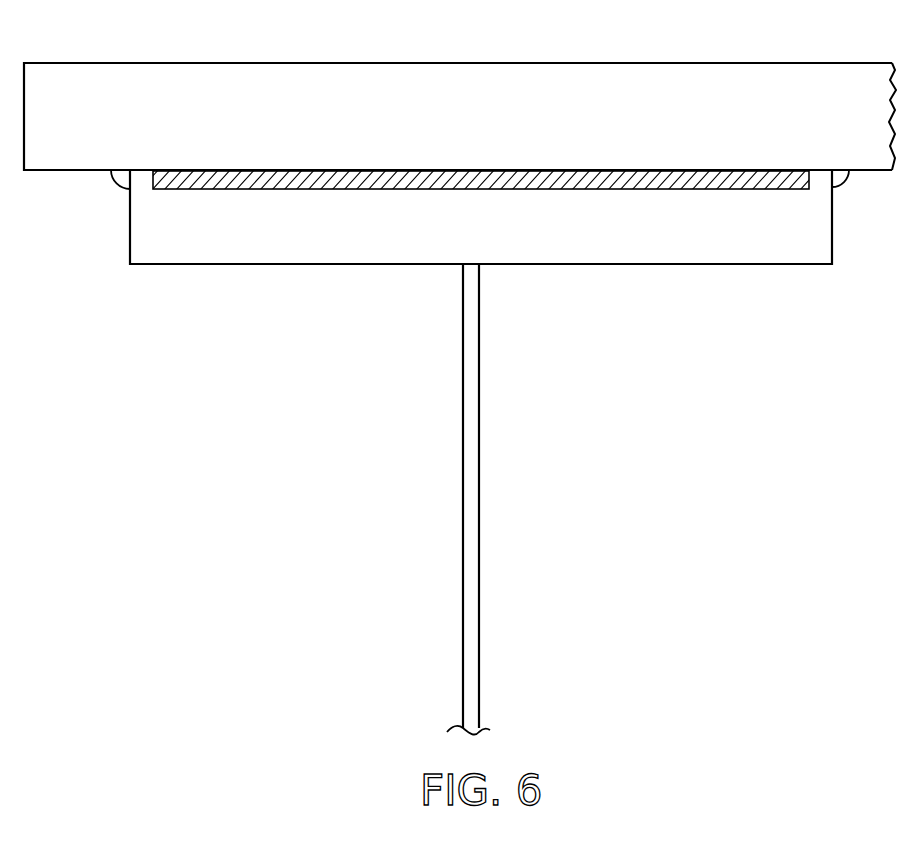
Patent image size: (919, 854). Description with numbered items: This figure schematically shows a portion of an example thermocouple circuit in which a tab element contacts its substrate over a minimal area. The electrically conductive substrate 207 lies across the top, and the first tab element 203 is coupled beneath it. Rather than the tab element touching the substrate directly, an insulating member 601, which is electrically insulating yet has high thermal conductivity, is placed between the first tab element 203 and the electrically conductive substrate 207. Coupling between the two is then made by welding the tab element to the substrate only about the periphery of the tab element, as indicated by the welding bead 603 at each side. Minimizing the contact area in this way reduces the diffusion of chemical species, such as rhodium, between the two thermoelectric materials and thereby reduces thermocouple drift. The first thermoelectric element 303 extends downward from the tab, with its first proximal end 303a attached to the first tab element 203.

The electrically conductive substrate 207 is at (608, 63).
The first tab element 203 is at (168, 264).
The insulating member 601 is at (656, 190).
The welding bead 603 is at (113, 176).
The first thermoelectric element 303 is at (491, 499).
The first proximal end 303a is at (462, 402).